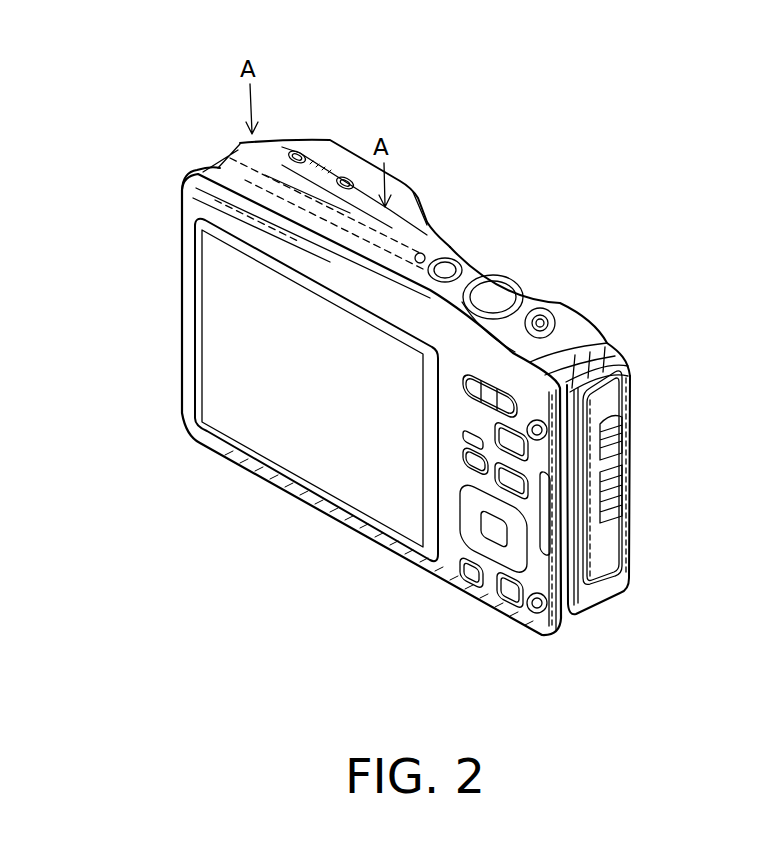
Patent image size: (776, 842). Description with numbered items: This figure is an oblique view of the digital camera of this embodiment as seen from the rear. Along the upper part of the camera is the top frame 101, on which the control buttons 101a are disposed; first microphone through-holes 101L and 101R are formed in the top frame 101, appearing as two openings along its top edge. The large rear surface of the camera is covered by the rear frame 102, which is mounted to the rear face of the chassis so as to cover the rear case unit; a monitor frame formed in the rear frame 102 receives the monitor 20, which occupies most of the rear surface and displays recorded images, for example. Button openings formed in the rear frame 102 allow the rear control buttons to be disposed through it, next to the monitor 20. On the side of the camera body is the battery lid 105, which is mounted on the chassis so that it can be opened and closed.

The top frame 101 is at (420, 234).
The control buttons 101a is at (545, 269).
The first microphone through-hole 101L is at (306, 140).
The first microphone through-hole 101R is at (349, 176).
The rear frame 102 is at (188, 366).
The monitor 20 is at (253, 394).
The battery lid 105 is at (625, 392).